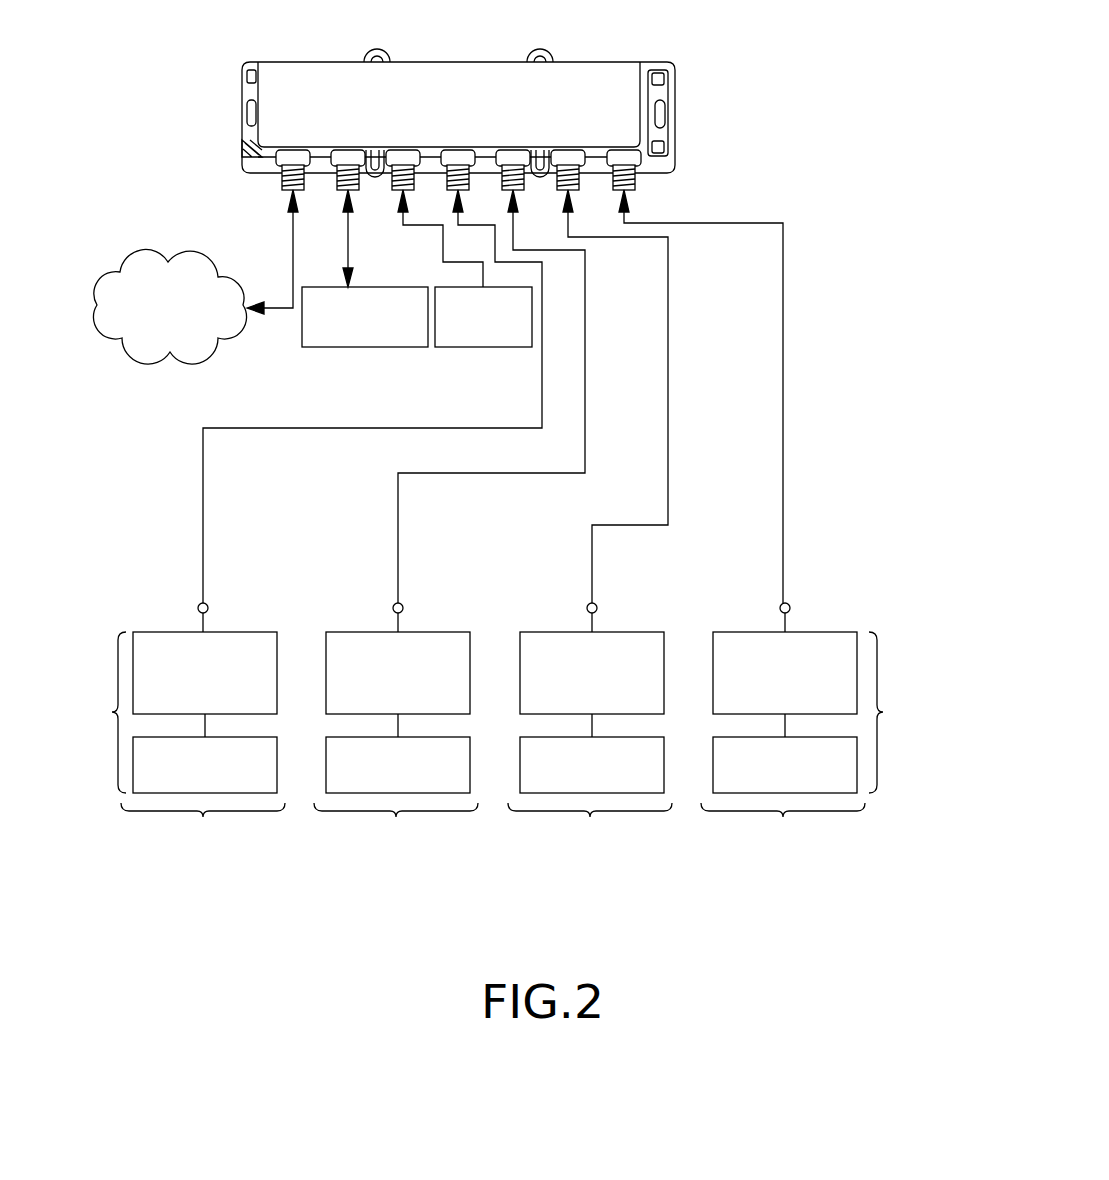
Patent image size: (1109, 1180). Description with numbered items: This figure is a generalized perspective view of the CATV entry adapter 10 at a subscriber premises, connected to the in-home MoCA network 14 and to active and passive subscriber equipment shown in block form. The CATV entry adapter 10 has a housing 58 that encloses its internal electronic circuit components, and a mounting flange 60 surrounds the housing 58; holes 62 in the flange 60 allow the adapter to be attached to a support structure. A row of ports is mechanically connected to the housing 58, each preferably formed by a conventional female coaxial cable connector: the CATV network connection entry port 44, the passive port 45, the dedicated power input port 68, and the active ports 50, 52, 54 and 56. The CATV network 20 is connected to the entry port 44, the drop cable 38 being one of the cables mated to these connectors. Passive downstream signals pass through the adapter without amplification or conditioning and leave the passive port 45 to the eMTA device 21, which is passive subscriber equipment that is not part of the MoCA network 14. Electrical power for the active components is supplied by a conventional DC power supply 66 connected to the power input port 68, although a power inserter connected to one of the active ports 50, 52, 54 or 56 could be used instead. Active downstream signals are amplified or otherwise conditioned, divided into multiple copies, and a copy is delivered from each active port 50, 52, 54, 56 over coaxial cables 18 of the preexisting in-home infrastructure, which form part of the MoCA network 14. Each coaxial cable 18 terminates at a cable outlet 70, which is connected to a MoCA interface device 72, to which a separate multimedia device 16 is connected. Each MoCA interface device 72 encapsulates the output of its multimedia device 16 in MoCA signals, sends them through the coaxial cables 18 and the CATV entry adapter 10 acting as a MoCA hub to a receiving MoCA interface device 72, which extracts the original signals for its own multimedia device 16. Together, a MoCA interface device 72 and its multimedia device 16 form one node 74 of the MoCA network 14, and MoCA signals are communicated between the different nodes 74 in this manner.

The CATV entry adapter 10 is at (750, 80).
The MoCA in-home entertainment network 14 is at (852, 392).
The multimedia device 16 is at (277, 765).
The coaxial cable 18 is at (586, 270).
The CATV network 20 is at (134, 356).
The eMTA device 21 is at (392, 348).
The drop cable 38 is at (292, 265).
The CATV network connection entry port 44 is at (290, 186).
The passive port 45 is at (345, 186).
The active port 50 is at (463, 186).
The active port 52 is at (518, 186).
The active port 54 is at (573, 186).
The active port 56 is at (632, 186).
The housing 58 is at (608, 62).
The mounting flange 60 is at (244, 80).
The hole 62 is at (244, 115).
The DC power supply 66 is at (478, 348).
The power input port 68 is at (408, 186).
The cable outlet 70 is at (198, 606).
The MoCA interface device 72 is at (240, 631).
The node 74 is at (203, 850).